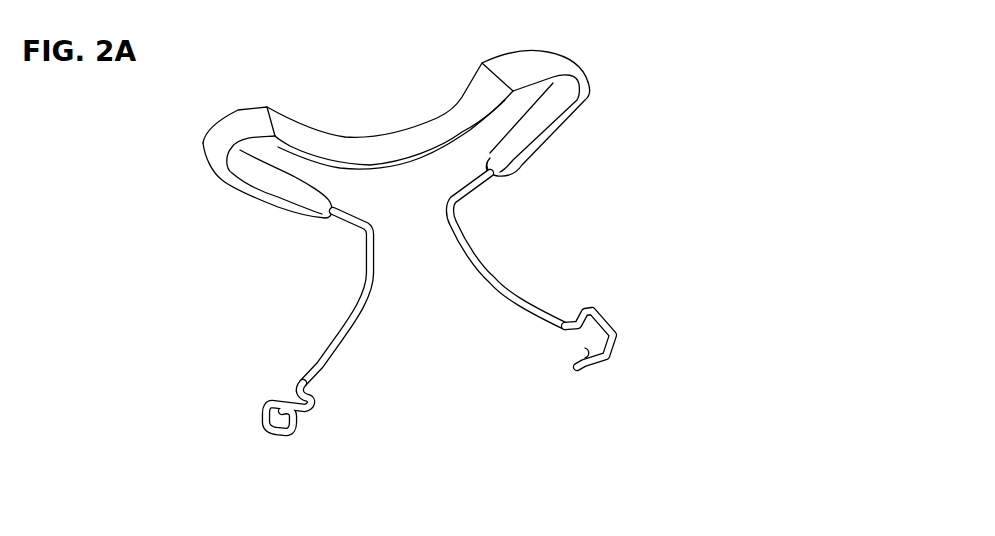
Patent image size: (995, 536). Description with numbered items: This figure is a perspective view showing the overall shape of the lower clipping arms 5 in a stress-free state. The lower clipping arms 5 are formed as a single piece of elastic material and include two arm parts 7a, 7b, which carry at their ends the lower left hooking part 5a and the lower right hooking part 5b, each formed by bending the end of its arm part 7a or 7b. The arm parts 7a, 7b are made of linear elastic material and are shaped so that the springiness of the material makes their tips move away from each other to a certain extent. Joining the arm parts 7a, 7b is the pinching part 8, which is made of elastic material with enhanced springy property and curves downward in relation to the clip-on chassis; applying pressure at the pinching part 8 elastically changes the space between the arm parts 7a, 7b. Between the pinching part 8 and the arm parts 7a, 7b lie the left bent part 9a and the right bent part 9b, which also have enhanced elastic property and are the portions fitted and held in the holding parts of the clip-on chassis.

The lower clipping arms 5 is at (596, 67).
The pinching part 8 is at (375, 153).
The left bent part 9a is at (210, 153).
The right bent part 9b is at (560, 105).
The arm part 7a is at (355, 317).
The arm part 7b is at (503, 283).
The lower left hooking part 5a is at (293, 432).
The lower right hooking part 5b is at (607, 358).